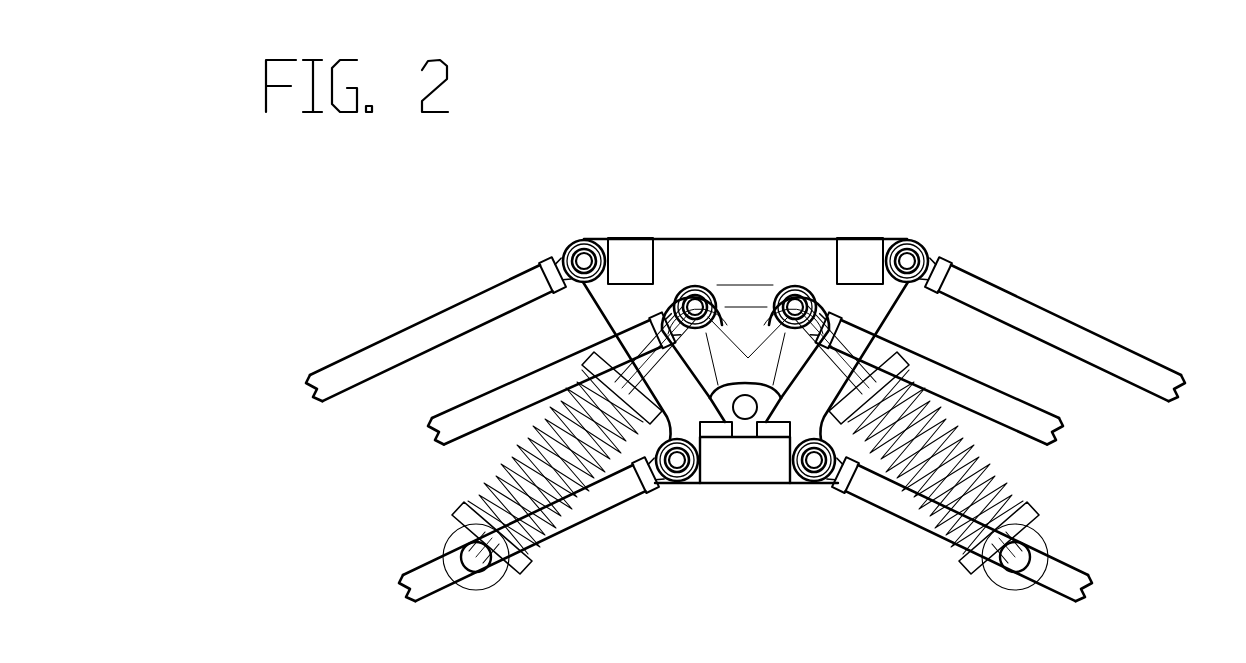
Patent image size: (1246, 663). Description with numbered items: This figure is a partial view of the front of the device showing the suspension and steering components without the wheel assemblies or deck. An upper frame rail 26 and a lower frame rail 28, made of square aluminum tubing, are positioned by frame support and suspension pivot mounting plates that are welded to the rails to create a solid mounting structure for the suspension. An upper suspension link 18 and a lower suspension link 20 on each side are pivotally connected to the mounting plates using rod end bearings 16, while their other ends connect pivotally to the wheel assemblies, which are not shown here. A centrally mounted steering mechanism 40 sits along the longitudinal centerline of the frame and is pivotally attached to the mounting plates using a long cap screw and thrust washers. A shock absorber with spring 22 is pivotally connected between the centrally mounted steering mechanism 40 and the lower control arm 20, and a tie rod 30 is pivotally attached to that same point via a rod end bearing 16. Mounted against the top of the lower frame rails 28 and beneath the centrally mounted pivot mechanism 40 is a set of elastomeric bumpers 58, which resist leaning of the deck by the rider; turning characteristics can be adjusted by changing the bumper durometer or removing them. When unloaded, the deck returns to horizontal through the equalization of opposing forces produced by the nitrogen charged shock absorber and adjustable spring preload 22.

The rod end bearing 16 is at (922, 243).
The upper suspension link 18 is at (1132, 358).
The lower suspension link 20 is at (1068, 575).
The shock absorber with spring 22 is at (1033, 507).
The upper frame rail 26 is at (858, 238).
The lower frame rail 28 is at (772, 483).
The tie rod 30 is at (1060, 424).
The centrally mounted steering mechanism 40 is at (742, 297).
The elastomeric bumper 58 is at (715, 430).